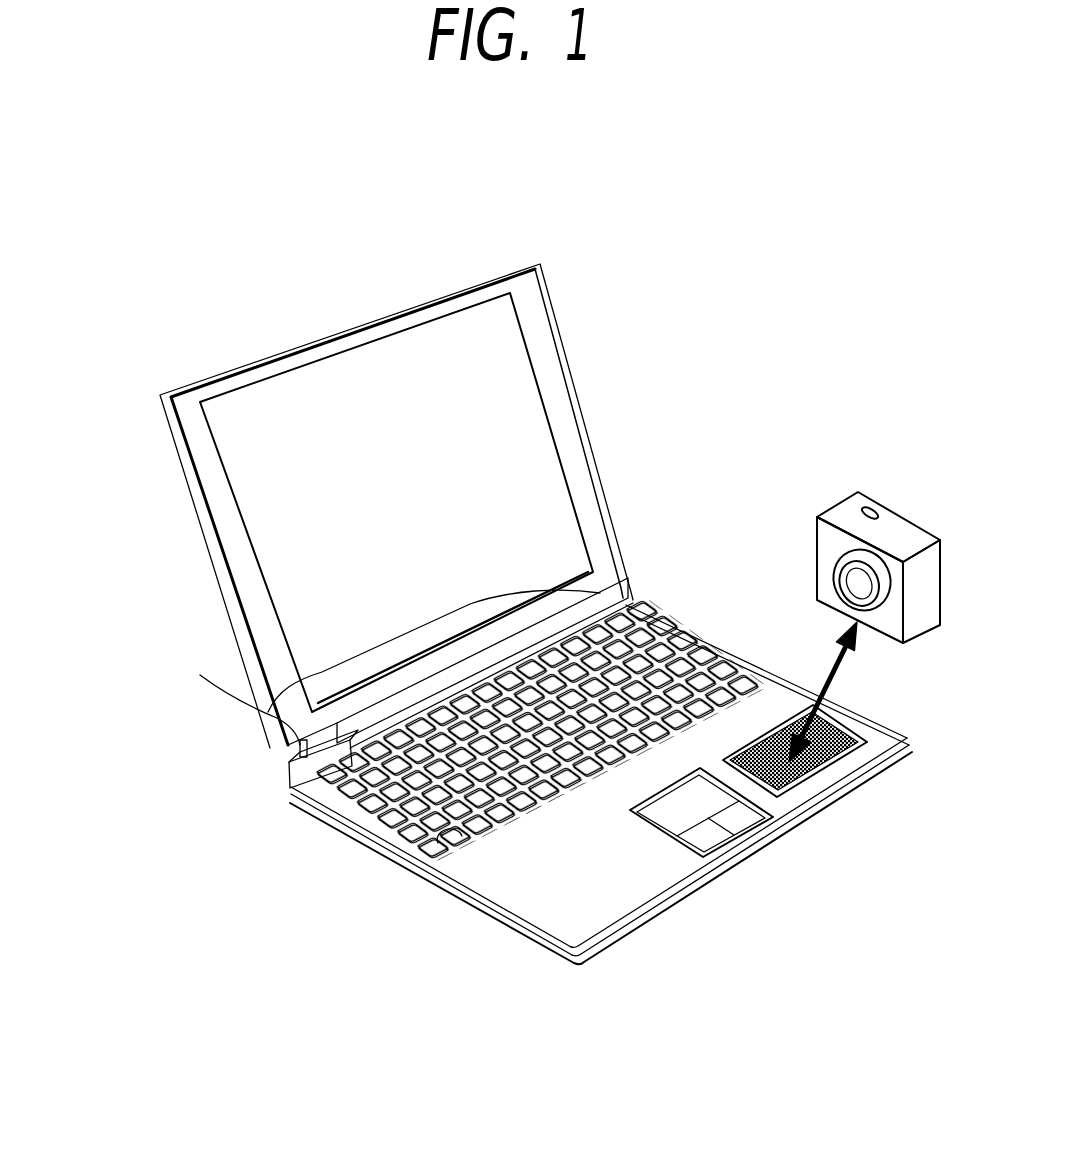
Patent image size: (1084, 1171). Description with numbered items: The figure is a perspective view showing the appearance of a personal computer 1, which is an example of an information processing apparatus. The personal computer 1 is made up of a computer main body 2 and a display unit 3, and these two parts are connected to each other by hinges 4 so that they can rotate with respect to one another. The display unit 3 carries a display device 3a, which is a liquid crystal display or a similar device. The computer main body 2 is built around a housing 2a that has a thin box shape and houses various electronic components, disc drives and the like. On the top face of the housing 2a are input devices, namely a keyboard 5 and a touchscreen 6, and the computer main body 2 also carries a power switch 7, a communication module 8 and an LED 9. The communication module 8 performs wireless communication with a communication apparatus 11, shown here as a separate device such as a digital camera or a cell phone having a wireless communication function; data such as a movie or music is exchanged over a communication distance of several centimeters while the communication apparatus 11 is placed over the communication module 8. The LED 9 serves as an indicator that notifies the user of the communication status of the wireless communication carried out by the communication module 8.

The personal computer 1 is at (779, 252).
The computer main body 2 is at (358, 882).
The housing 2a is at (593, 890).
The display unit 3 is at (147, 521).
The display device 3a is at (400, 368).
The hinges 4 is at (323, 747).
The keyboard 5 is at (437, 882).
The touchscreen 6 is at (695, 808).
The power switch 7 is at (648, 607).
The communication module 8 is at (807, 757).
The LED 9 is at (308, 802).
The communication apparatus 11 is at (868, 492).